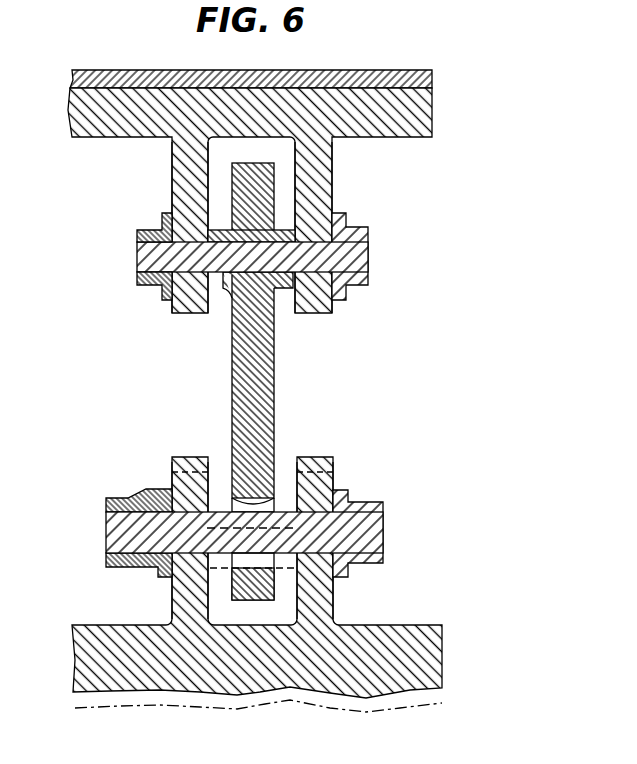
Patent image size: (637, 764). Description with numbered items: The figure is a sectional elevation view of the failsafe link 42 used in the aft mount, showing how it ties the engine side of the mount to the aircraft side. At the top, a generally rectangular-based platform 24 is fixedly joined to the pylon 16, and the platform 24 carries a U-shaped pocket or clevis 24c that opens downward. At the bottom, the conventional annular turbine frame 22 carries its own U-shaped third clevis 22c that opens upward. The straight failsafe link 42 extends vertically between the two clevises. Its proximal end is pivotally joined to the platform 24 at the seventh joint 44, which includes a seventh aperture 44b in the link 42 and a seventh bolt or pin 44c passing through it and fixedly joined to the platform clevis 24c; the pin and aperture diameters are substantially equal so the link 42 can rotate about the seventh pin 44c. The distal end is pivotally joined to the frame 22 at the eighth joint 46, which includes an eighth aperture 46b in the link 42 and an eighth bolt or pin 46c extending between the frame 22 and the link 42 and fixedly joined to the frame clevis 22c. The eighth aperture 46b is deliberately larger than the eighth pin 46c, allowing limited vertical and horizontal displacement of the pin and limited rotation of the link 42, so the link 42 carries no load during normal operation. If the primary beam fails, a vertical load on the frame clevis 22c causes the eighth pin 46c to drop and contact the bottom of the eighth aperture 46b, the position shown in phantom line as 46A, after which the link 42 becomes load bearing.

The pylon 16 is at (432, 79).
The platform 24 is at (445, 128).
The third clevis 24c is at (333, 175).
The seventh joint 44 is at (154, 311).
The seventh aperture 44b is at (223, 286).
The seventh pin 44c is at (150, 256).
The failsafe link 42 is at (275, 384).
The eighth joint 46 is at (130, 485).
The eighth aperture 46b is at (278, 508).
The eighth pin 46c is at (106, 530).
The phantom line position of eighth pin 46A is at (290, 577).
The third clevis 22c is at (170, 590).
The turbine frame 22 is at (452, 653).